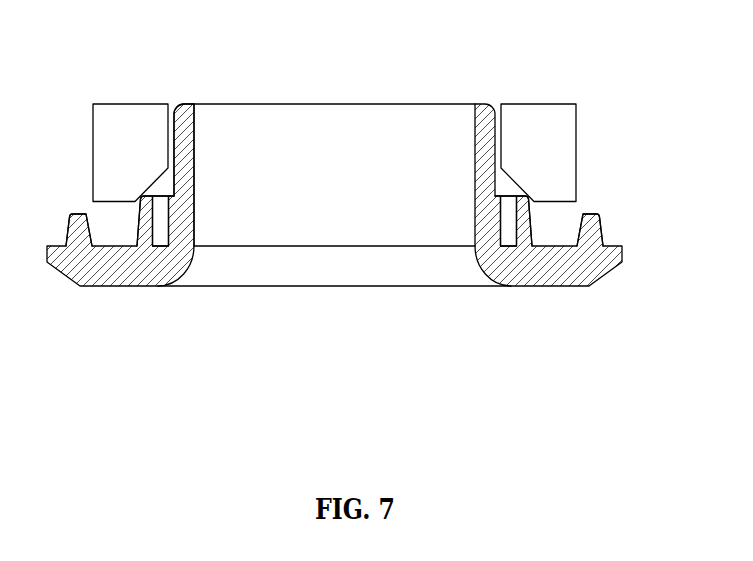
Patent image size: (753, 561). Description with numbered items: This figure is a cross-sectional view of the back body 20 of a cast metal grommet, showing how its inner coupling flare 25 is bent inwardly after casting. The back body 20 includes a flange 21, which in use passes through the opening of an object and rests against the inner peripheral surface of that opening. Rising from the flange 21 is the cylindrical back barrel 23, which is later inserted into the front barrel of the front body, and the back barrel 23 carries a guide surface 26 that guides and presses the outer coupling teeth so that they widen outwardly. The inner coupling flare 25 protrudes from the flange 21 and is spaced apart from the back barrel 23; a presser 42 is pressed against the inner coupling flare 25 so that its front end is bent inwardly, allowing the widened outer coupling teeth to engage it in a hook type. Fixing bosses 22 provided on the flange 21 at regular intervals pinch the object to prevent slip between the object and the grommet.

The back body 20 is at (108, 268).
The flange 21 is at (116, 245).
The fixing boss 22 is at (599, 222).
The back barrel 23 is at (486, 120).
The inner coupling flare 25 is at (531, 215).
The guide surface 26 is at (170, 226).
The presser 42 is at (562, 137).